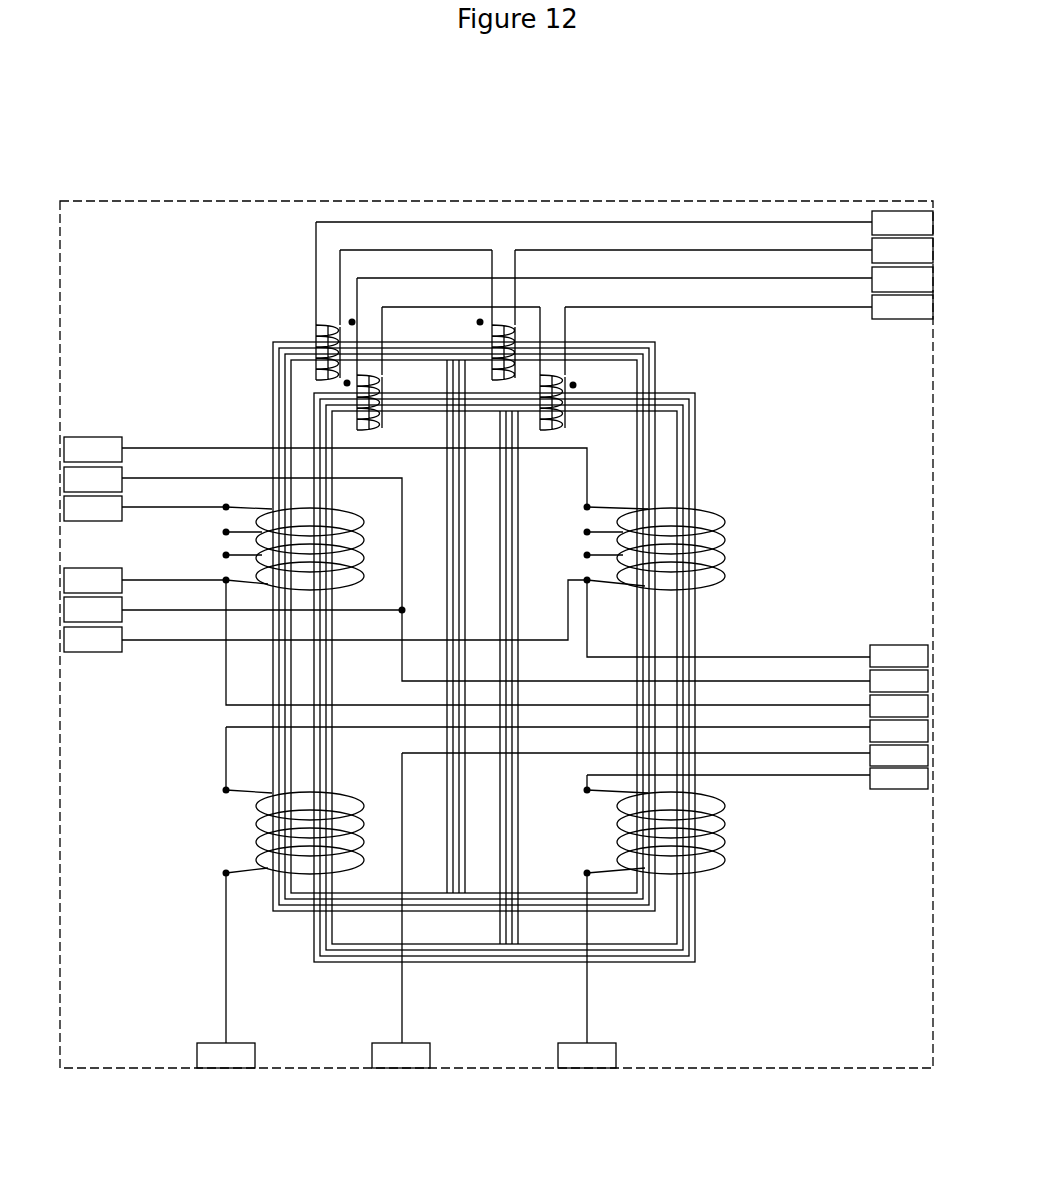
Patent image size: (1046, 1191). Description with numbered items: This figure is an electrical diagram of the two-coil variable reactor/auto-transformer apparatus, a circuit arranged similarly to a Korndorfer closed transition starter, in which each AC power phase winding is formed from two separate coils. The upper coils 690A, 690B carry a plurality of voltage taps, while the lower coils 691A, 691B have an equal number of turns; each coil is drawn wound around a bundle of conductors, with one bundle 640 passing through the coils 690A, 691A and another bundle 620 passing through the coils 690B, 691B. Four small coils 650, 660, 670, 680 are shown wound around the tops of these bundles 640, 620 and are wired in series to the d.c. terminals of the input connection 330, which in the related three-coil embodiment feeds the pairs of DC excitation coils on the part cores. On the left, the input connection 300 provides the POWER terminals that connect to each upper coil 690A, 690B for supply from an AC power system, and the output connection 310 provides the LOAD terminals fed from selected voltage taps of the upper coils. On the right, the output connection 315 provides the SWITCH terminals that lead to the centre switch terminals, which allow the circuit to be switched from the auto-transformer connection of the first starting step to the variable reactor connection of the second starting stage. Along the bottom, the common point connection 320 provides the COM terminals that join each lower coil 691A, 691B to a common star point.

The input connection 300 is at (85, 437).
The output connection 310 is at (85, 653).
The output connection to centre switch terminals 315 is at (900, 645).
The common point connection 320 is at (226, 1068).
The input connection to DC excitation coils 330 is at (900, 211).
The second conductor bundle 620 is at (683, 450).
The first conductor bundle 640 is at (652, 342).
The first coil 650 is at (326, 324).
The second coil 660 is at (505, 324).
The third coil 670 is at (370, 385).
The fourth coil 680 is at (549, 383).
The upper coil 690A is at (226, 555).
The upper coil 690B is at (256, 840).
The lower coil 691A is at (725, 548).
The lower coil 691B is at (725, 835).